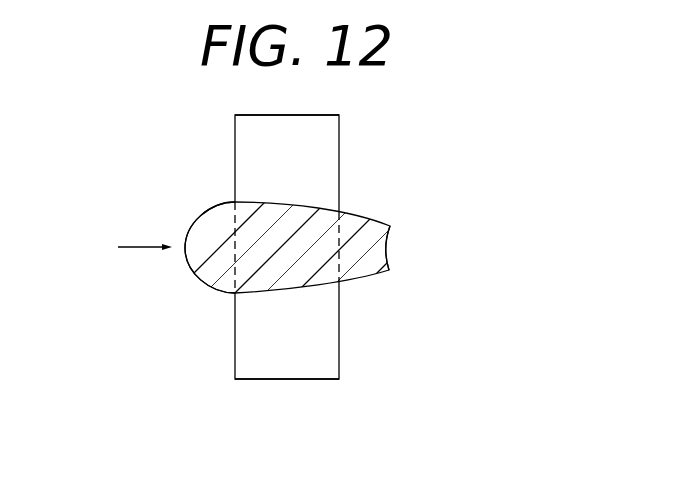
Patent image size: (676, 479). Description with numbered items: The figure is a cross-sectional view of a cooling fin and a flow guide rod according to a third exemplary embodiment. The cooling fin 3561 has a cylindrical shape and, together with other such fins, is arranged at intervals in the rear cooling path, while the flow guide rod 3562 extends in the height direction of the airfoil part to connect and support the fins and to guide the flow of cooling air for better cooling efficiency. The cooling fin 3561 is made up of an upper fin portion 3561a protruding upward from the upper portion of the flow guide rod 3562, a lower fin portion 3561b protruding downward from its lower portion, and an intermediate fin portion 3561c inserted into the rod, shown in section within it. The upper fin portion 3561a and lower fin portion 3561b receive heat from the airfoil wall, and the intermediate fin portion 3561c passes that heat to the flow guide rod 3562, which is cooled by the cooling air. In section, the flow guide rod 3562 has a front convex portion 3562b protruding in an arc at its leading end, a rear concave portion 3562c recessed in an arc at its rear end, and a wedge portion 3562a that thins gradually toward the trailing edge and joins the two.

The cooling fin 3561 is at (344, 157).
The upper fin portion 3561a is at (245, 152).
The lower fin portion 3561b is at (245, 348).
The intermediate fin portion 3561c is at (345, 216).
The flow guide rod 3562 is at (314, 315).
The wedge portion 3562a is at (277, 272).
The front convex portion 3562b is at (190, 272).
The rear concave portion 3562c is at (392, 233).